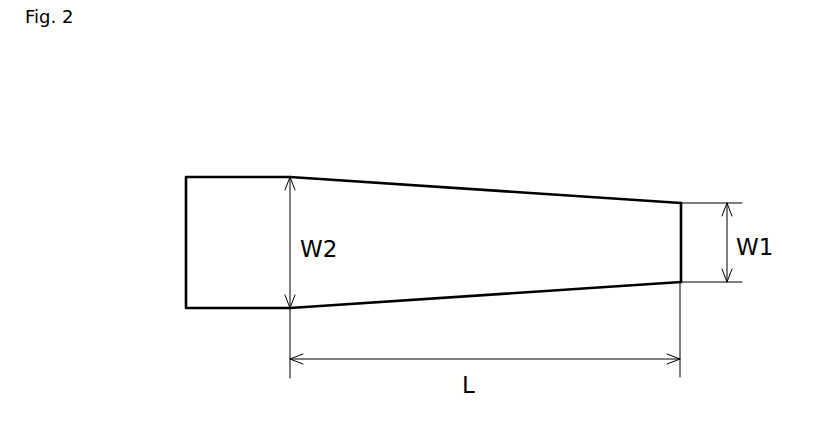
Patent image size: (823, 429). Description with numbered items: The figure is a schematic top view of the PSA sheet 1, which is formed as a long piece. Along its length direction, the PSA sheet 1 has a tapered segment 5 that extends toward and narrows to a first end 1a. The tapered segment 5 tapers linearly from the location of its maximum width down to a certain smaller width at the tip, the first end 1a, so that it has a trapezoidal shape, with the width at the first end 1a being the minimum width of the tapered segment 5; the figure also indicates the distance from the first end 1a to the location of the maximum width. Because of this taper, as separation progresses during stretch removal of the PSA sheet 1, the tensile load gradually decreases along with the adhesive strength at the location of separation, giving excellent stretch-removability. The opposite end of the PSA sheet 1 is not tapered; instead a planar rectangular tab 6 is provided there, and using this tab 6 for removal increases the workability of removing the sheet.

The PSA sheet 1 is at (477, 233).
The first end 1a is at (681, 231).
The tapered segment 5 is at (528, 192).
The tab 6 is at (218, 308).